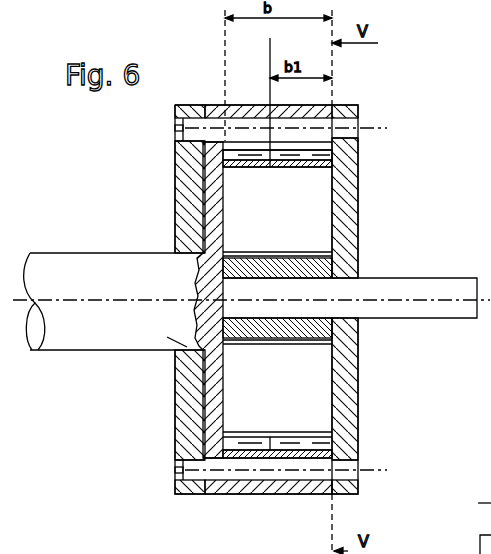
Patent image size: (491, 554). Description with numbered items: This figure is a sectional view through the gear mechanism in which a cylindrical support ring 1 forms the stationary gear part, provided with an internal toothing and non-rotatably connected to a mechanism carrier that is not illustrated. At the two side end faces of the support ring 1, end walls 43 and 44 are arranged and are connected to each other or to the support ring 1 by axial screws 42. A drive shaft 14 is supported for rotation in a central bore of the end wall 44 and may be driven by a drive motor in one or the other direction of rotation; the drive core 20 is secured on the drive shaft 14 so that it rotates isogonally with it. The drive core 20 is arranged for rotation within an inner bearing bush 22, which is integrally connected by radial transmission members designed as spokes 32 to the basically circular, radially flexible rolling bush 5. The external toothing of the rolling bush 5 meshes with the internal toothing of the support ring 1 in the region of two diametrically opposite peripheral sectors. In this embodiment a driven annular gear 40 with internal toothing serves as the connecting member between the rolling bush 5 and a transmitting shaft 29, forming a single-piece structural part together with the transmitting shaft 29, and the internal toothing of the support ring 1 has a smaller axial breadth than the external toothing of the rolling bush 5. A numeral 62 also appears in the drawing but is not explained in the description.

The support ring 1 is at (240, 106).
The axial screws 42 is at (189, 105).
The end wall 43 is at (188, 169).
The end wall 44 is at (350, 207).
The rolling bush 5 is at (307, 180).
The spokes 32 is at (315, 224).
The drive core 20 is at (330, 327).
The bearing bush 22 is at (358, 377).
The driven annular gear 40 is at (196, 352).
The drive shaft 14 is at (446, 286).
The transmitting shaft 29 is at (85, 272).
The seal 62 is at (490, 509).